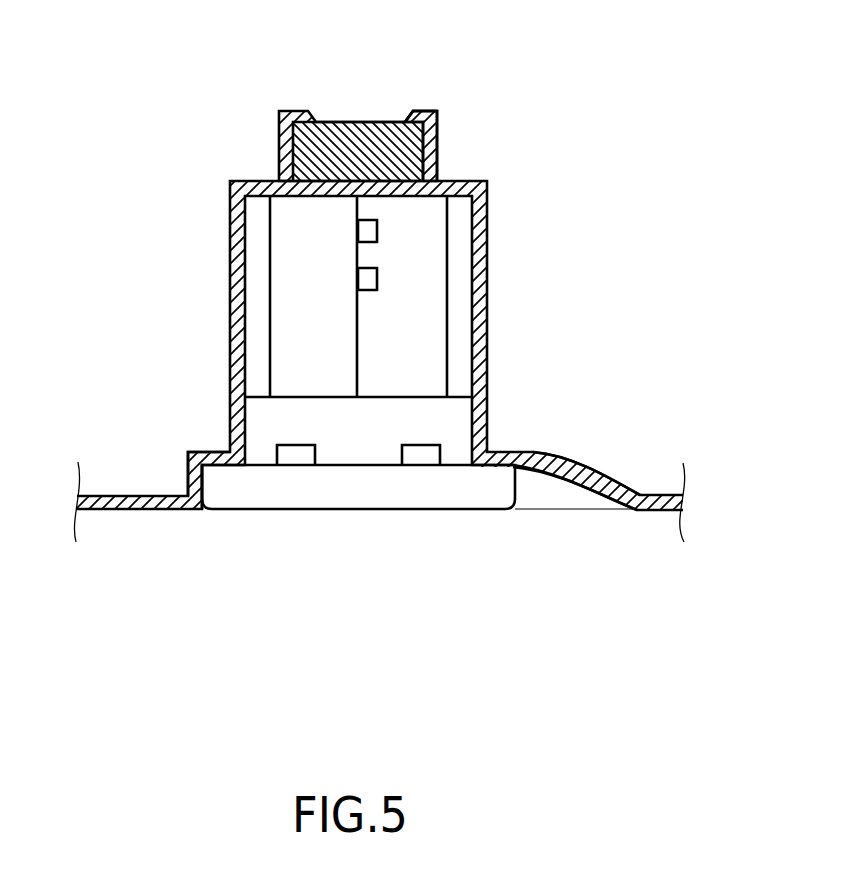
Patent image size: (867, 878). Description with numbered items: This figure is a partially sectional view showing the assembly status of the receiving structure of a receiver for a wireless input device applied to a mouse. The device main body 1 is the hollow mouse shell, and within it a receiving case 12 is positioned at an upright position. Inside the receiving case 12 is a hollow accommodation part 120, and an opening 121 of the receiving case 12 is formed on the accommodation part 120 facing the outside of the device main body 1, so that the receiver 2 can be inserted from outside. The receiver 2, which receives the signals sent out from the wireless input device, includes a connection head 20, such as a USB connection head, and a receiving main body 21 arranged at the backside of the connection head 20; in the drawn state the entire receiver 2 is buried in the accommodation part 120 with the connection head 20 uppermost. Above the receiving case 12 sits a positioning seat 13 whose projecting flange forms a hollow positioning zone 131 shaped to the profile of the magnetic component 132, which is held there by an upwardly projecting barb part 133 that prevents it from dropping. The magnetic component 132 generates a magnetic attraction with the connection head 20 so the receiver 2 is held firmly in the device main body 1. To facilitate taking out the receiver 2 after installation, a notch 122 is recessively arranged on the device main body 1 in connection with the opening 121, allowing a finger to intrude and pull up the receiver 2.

The device main body 1 is at (488, 247).
The receiving case 12 is at (478, 308).
The accommodation part 120 is at (257, 322).
The opening 121 is at (205, 510).
The notch 122 is at (562, 493).
The positioning seat 13 is at (295, 111).
The positioning zone 131 is at (300, 152).
The magnetic component 132 is at (403, 147).
The barb part 133 is at (415, 110).
The connection head 20 is at (430, 365).
The receiver 2 is at (456, 511).
The receiving main body 21 is at (397, 492).